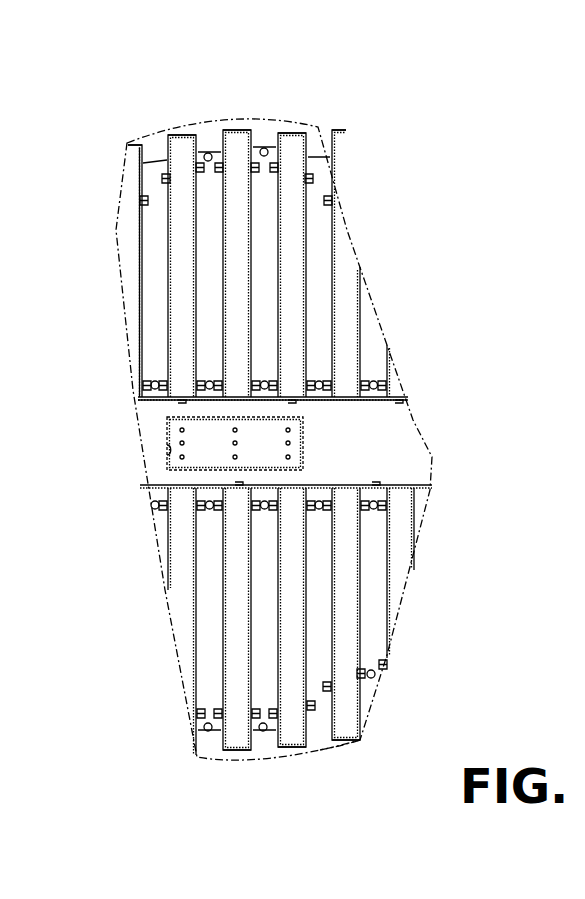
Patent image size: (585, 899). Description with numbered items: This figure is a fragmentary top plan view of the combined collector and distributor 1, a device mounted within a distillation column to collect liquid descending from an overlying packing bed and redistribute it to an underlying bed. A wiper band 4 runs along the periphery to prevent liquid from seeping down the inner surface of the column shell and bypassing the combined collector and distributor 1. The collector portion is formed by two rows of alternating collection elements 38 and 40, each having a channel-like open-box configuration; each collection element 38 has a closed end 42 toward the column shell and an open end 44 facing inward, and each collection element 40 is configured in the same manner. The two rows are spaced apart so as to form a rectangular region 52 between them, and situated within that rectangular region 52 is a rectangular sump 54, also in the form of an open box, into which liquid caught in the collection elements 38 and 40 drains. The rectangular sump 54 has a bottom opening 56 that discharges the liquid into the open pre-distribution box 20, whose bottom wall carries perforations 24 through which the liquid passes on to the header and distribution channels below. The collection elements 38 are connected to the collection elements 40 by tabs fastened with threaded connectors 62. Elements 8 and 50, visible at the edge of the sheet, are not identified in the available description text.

The combined collector and distributor 1 is at (403, 108).
The wiper band 4 is at (297, 108).
The seat back 8 is at (578, 190).
The open pre-distribution box 20 is at (277, 453).
The perforations 24 is at (292, 457).
The collection element 38 is at (180, 150).
The collection element 40 is at (292, 195).
The closed end 42 is at (133, 143).
The open end 44 is at (180, 398).
The frame 50 is at (584, 257).
The rectangular region 52 is at (386, 448).
The rectangular sump 54 is at (410, 397).
The bottom opening 56 is at (170, 452).
The threaded connectors 62 is at (335, 685).